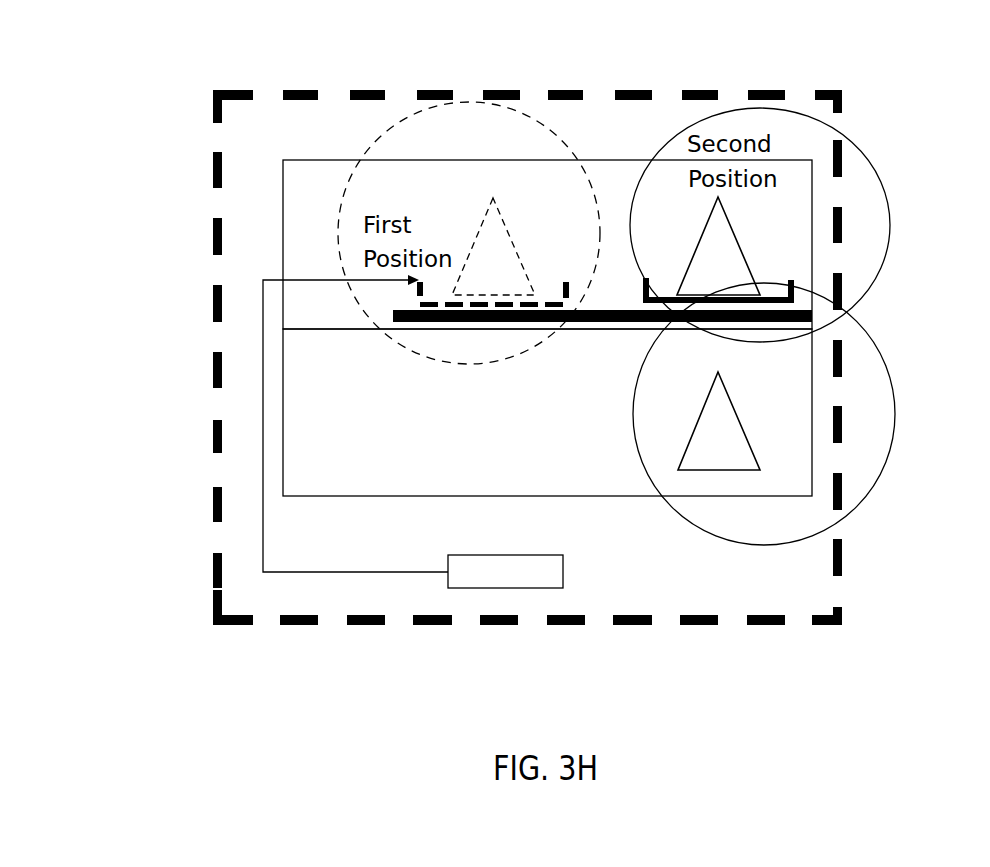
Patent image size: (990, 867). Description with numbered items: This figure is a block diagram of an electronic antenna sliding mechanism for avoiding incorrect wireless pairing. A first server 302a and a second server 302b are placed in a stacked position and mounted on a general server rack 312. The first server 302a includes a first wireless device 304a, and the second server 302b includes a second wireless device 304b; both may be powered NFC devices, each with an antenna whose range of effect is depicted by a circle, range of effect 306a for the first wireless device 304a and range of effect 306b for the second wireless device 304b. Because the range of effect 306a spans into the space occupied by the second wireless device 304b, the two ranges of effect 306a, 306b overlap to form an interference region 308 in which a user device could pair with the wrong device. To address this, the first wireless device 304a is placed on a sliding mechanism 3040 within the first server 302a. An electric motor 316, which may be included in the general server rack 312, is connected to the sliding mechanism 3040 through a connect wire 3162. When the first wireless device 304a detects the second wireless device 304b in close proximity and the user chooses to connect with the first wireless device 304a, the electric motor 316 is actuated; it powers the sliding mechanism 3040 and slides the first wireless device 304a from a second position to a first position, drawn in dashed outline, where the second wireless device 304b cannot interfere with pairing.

The general server rack 312 is at (212, 100).
The first server 302a is at (813, 195).
The second server 302b is at (813, 372).
The first wireless device 304a is at (760, 277).
The second wireless device 304b is at (758, 453).
The sliding mechanism 3040 is at (797, 297).
The range of effect 306a is at (762, 100).
The range of effect 306b is at (885, 470).
The interference region 308 is at (815, 316).
The electric motor 316 is at (447, 570).
The connect wire 3162 is at (265, 542).